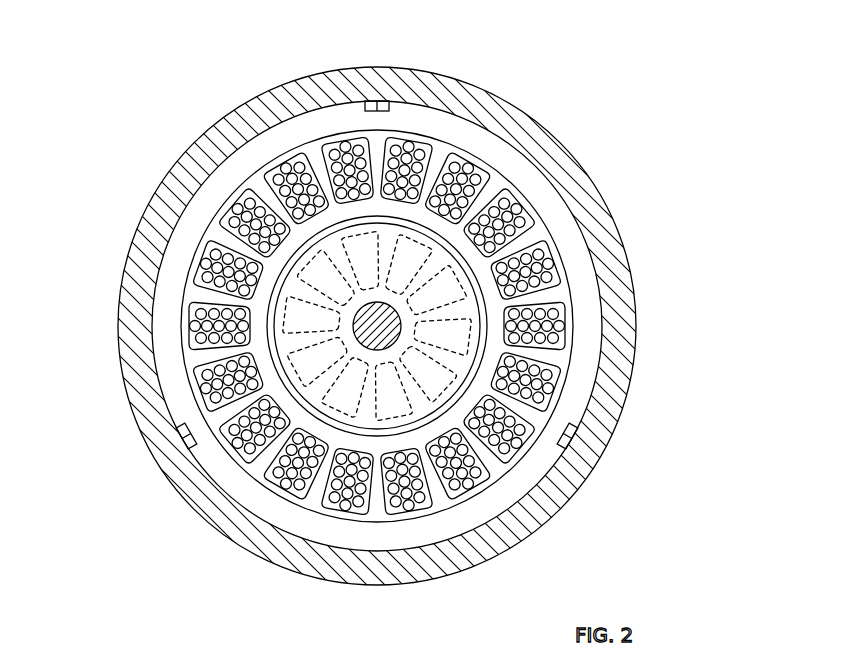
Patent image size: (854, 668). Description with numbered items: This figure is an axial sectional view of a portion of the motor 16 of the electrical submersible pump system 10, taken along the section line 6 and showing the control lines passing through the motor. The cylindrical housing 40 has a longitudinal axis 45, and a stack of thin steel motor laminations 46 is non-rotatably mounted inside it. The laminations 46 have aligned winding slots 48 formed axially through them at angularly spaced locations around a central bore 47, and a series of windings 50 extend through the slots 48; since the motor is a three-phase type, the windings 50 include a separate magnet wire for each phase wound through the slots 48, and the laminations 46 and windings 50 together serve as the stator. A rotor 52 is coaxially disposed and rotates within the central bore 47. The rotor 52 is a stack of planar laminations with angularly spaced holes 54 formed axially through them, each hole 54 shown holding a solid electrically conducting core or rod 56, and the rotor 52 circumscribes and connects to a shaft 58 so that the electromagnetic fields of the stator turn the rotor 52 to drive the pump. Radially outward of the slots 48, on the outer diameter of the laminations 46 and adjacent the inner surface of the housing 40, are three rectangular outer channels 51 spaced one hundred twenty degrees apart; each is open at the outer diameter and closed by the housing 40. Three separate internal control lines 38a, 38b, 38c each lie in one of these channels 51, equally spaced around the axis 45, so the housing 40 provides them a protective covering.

The electric machine 10 is at (140, 150).
The section line 6- 6 is at (376, 67).
The motor 16 is at (654, 315).
The housing 40 is at (458, 97).
The windings 50 is at (177, 496).
The outer slots or channels 51 is at (590, 400).
The motor laminations 46 is at (493, 150).
The internal control line 38a is at (377, 100).
The internal control line 38b is at (575, 441).
The internal control line 38c is at (183, 440).
The rotor 52 is at (450, 417).
The winding slots 48 is at (563, 273).
The central bore 47 is at (460, 277).
The shaft 58 is at (362, 347).
The electrically conducting core or rod 56 is at (373, 400).
The slots or holes 54 is at (400, 410).
The longitudinal axis 45 is at (375, 325).